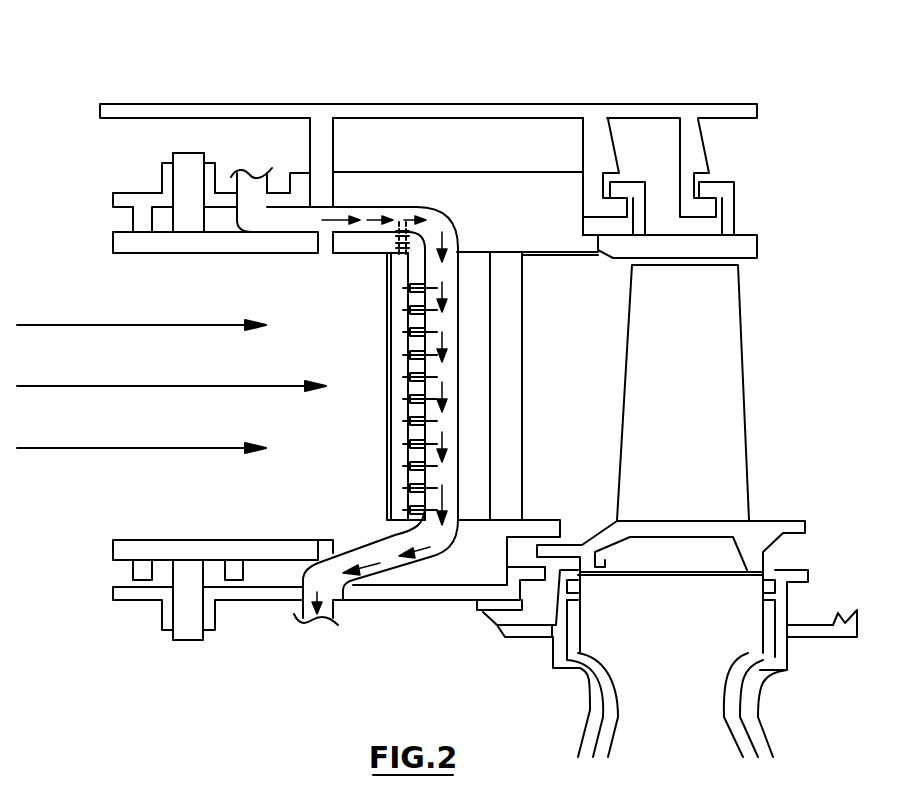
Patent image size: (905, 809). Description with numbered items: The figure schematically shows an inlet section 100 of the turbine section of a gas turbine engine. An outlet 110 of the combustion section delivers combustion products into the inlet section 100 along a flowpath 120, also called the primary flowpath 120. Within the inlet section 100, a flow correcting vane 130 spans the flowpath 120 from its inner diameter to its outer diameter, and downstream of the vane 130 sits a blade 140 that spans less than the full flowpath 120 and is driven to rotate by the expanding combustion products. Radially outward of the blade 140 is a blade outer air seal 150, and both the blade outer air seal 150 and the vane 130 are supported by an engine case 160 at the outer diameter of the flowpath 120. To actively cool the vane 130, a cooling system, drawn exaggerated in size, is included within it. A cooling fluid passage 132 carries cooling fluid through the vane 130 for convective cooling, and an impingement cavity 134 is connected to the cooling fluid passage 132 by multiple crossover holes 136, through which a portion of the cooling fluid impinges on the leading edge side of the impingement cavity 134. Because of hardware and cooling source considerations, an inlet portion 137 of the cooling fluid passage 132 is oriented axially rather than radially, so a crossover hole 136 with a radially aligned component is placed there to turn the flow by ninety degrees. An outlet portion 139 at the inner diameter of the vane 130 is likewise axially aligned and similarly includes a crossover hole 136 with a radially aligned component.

The inlet section 100 is at (813, 155).
The outlet of a combustion section 110 is at (108, 299).
The flowpath 120 is at (128, 386).
The flow correcting vane 130 is at (507, 183).
The cooling fluid passage 132 is at (298, 223).
The impingement cavity 134 is at (390, 447).
The crossover holes 136 is at (440, 226).
The inlet portion 137 is at (448, 228).
The outlet portion 139 is at (470, 545).
The blade 140 is at (728, 389).
The blade outer air seal 150 is at (677, 245).
The engine case 160 is at (491, 107).